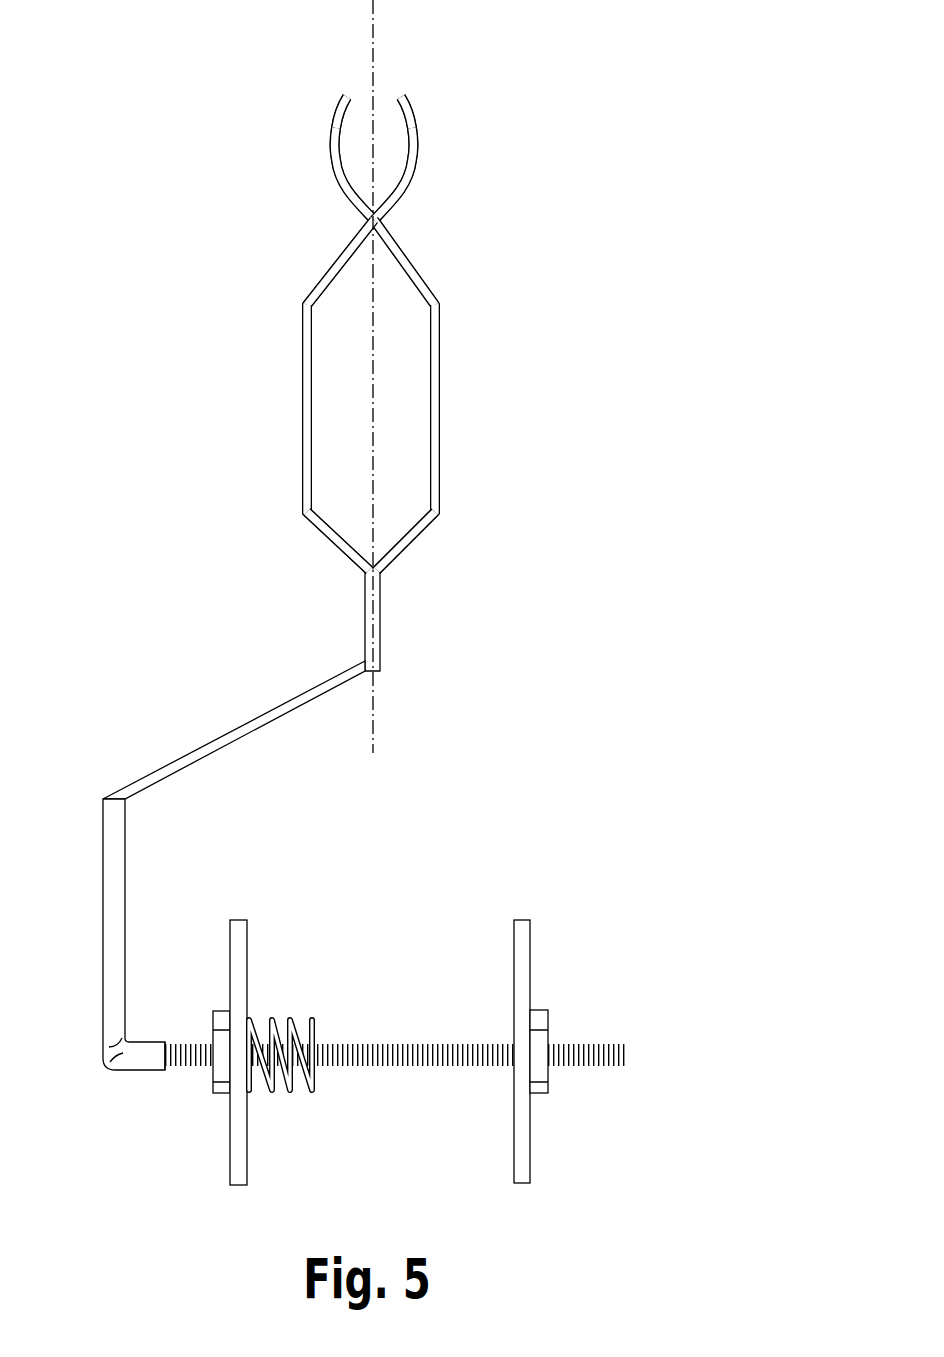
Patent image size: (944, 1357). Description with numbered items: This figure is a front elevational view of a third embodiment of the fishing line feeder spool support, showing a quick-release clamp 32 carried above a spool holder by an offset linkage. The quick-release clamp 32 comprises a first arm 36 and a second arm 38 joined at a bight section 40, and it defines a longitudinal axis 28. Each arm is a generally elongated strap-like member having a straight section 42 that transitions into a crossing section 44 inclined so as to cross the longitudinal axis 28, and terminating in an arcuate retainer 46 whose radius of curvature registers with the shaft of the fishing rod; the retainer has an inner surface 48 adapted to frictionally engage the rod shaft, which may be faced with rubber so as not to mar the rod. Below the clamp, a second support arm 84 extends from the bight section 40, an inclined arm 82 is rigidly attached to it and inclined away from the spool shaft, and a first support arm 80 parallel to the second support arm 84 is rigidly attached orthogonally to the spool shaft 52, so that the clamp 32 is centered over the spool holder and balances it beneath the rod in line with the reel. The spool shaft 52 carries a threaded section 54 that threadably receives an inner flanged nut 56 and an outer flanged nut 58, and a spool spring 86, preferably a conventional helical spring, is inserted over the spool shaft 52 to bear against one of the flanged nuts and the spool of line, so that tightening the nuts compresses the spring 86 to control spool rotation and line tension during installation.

The longitudinal axis 28 is at (374, 12).
The quick-release clamp 32 is at (384, 316).
The first arm 36 is at (442, 447).
The second arm 38 is at (300, 467).
The bight section 40 is at (336, 563).
The straight section 42 is at (301, 378).
The crossing section 44 is at (330, 270).
The arcuate retainer 46 is at (330, 140).
The inner surface 48 is at (355, 93).
The spool shaft 52 is at (157, 1048).
The threaded section 54 is at (335, 1043).
The inner flanged nut 56 is at (243, 950).
The outer flanged nut 58 is at (522, 920).
The first support arm 80 is at (113, 908).
The inclined arm 82 is at (210, 752).
The second support arm 84 is at (383, 640).
The spool spring 86 is at (292, 1023).